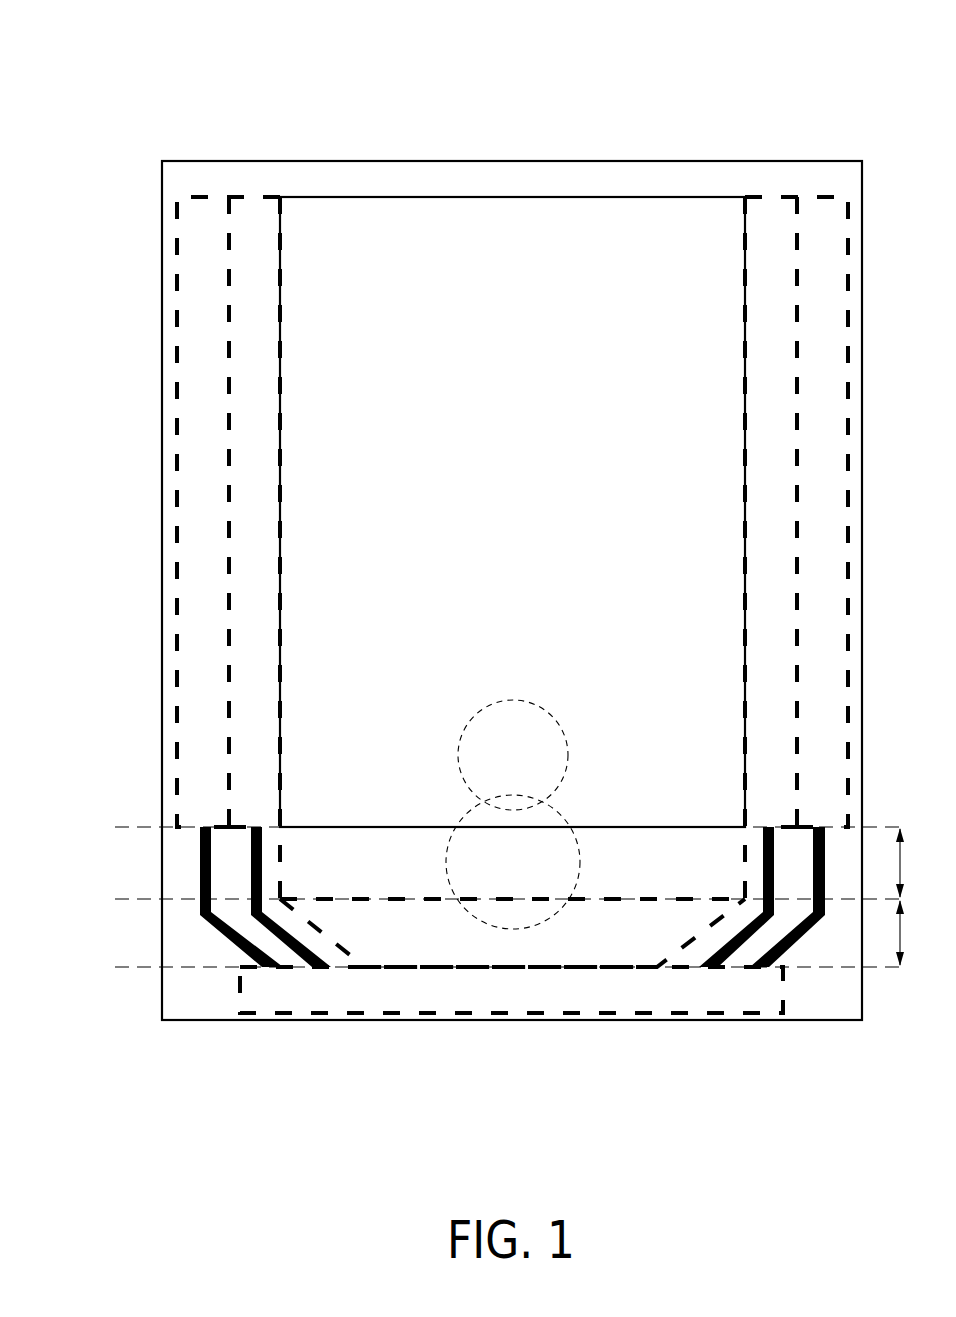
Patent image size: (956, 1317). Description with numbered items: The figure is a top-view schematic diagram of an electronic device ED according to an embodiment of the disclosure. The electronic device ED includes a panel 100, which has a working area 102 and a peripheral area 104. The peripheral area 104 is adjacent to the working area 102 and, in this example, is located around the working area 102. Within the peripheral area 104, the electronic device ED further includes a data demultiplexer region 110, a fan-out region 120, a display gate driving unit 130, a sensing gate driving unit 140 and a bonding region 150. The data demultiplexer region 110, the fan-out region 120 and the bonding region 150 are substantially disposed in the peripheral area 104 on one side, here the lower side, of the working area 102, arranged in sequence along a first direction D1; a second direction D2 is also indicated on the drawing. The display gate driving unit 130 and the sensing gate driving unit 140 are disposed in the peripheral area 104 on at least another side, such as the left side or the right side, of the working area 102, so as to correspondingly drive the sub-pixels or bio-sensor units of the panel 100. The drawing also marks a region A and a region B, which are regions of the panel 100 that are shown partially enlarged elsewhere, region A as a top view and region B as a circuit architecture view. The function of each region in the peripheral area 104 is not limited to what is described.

The panel 100 is at (570, 160).
The working area 102 is at (534, 460).
The peripheral area 104 is at (183, 182).
The data demultiplexer region 110 is at (531, 863).
The fan-out region 120 is at (531, 897).
The display gate driving unit 130 is at (192, 235).
The sensing gate driving unit 140 is at (240, 284).
The bonding region 150 is at (660, 1004).
The region A is at (541, 708).
The region B is at (556, 808).
The electronic device ED is at (770, 86).
The first direction D1 is at (67, 1063).
The second direction D2 is at (67, 1063).